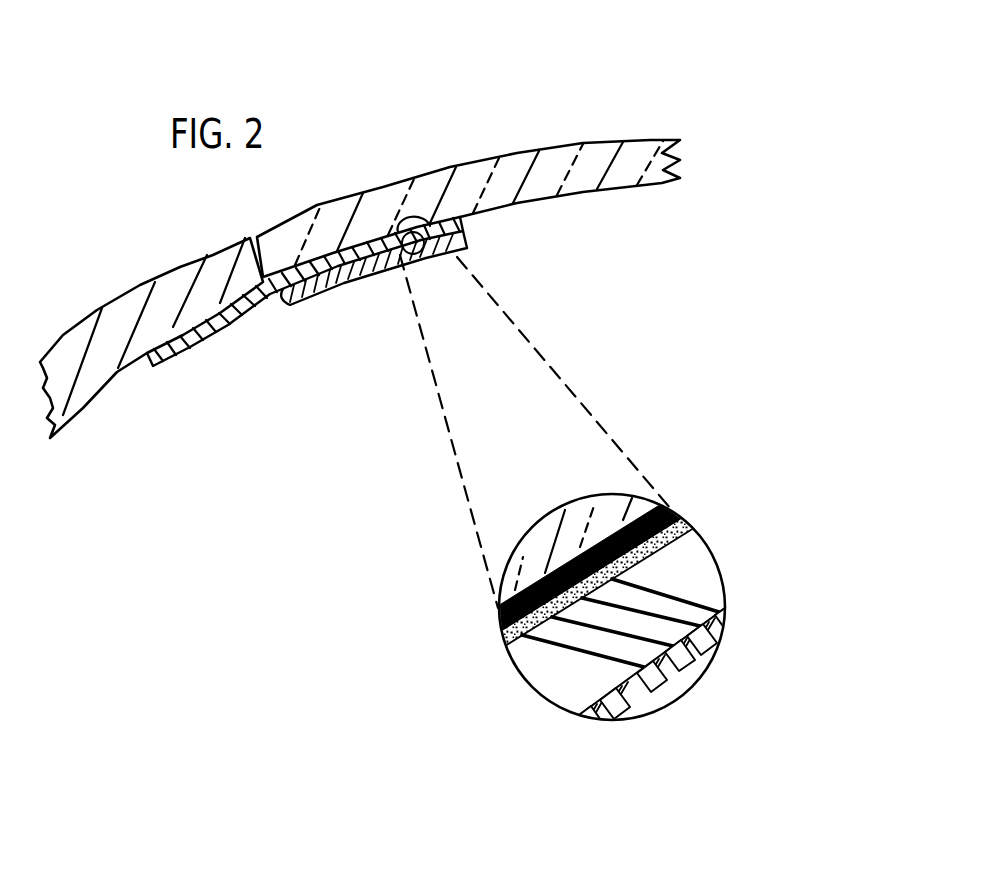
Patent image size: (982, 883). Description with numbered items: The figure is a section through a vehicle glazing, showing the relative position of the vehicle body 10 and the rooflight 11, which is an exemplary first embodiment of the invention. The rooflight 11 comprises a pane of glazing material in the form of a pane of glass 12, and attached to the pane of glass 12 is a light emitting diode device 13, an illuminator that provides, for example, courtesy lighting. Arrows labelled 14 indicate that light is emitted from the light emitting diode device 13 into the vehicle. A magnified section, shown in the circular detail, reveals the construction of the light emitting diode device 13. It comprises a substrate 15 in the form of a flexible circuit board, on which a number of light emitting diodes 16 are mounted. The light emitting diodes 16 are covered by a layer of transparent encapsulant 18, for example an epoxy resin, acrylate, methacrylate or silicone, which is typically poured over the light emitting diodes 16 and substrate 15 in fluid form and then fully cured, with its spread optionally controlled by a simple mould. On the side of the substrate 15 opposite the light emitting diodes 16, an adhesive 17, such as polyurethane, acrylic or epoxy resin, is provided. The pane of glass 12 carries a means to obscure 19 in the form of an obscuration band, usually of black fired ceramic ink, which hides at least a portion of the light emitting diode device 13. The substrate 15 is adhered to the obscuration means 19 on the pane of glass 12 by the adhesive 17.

The vehicle body 10 is at (113, 333).
The rooflight 11 is at (542, 100).
The pane of glass 12 is at (432, 190).
The light emitting diode device 13 is at (201, 368).
The arrows 14 is at (311, 298).
The substrate 15 is at (697, 553).
The light emitting diodes 16 is at (597, 713).
The adhesive 17 is at (517, 648).
The layer of transparent encapsulant 18 is at (680, 687).
The means to obscure 19 is at (676, 511).